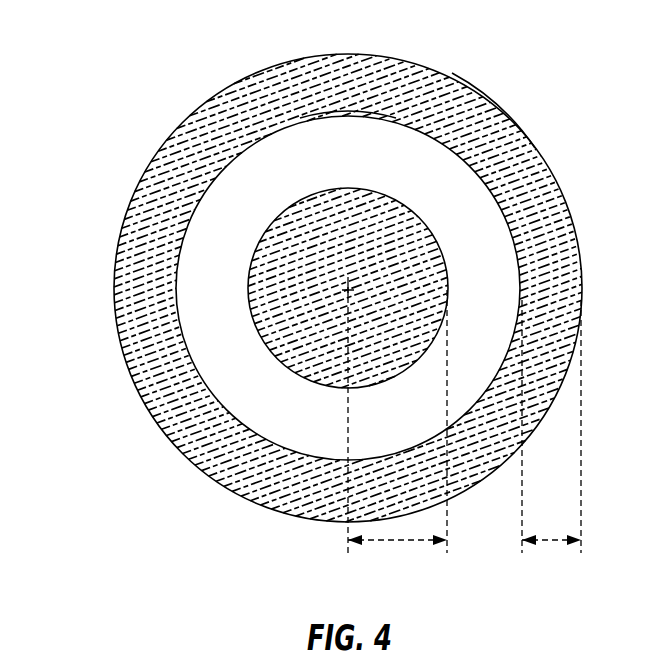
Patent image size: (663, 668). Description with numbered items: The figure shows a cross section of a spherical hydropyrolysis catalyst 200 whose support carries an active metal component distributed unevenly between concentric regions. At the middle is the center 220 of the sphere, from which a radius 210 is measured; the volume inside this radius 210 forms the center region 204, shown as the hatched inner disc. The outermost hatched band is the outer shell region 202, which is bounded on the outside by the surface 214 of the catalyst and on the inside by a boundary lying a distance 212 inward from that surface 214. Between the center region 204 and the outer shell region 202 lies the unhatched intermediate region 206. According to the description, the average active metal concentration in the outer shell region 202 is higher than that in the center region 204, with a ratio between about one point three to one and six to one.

The catalyst 200 is at (114, 60).
The outer shell region 202 is at (552, 207).
The center region 204 is at (282, 247).
The intermediate region 206 is at (369, 158).
The radius 210 is at (392, 541).
The distance 212 is at (551, 541).
The surface 214 is at (527, 137).
The center 220 is at (344, 293).